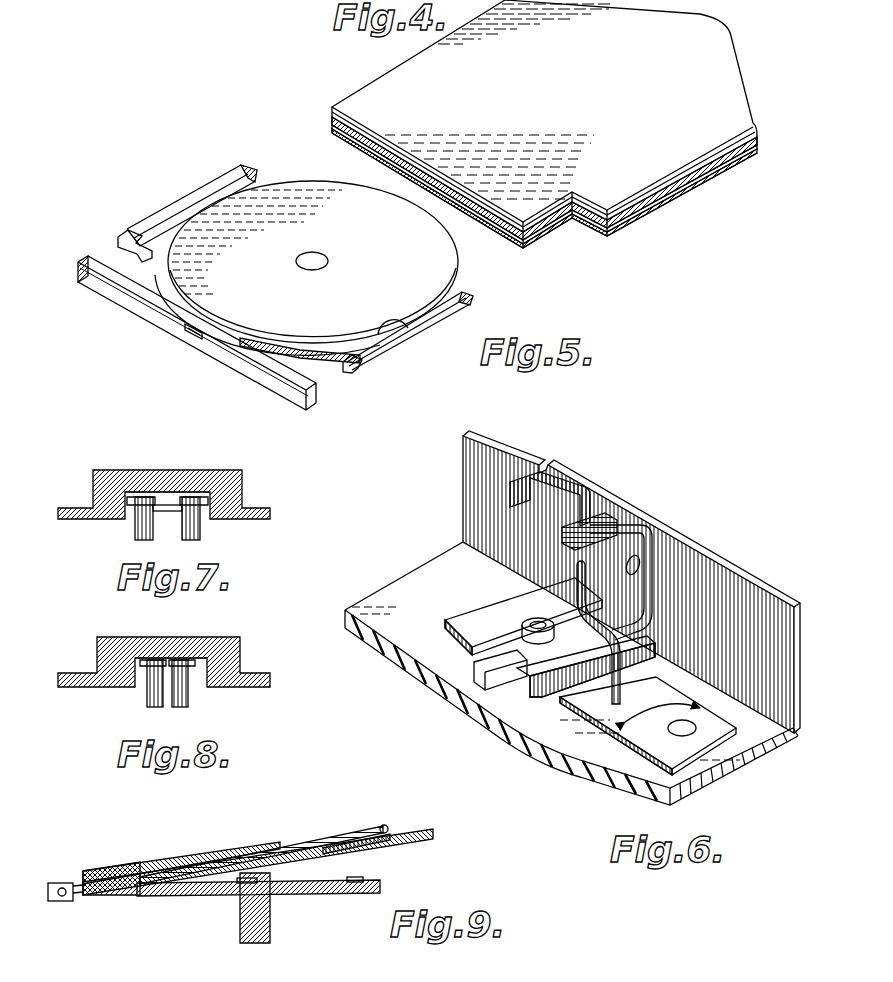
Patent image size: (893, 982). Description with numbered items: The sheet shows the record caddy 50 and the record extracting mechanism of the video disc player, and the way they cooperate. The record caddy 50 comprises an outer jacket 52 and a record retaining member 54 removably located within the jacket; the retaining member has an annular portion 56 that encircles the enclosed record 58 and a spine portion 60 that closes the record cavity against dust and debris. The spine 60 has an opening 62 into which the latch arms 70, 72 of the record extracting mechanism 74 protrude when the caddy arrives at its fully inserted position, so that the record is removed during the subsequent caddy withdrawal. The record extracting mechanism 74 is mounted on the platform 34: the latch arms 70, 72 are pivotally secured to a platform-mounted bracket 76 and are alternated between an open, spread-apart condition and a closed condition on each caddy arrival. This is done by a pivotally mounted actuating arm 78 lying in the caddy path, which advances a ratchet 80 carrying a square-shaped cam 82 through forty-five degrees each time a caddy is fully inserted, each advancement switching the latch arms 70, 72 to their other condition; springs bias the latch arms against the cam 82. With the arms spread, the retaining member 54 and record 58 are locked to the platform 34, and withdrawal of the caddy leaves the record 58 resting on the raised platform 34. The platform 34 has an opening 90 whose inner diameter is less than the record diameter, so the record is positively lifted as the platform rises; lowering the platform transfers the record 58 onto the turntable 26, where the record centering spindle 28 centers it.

In FIG. 9, the turntable 26 is at (307, 890).
In FIG. 9, the record centering spindle 28 is at (240, 903).
In FIG. 6, the platform 34 is at (416, 575).
In FIG. 9, the platform 34 is at (435, 832).
In FIG. 5, the record caddy 50 is at (190, 112).
In FIG. 4, the outer jacket 52 is at (743, 103).
In FIG. 5, the record retaining member 54 is at (160, 203).
In FIG. 5, the annular portion 56 is at (417, 327).
In FIG. 5, the record 58 is at (317, 188).
In FIG. 9, the record 58 is at (353, 828).
In FIG. 5, the spine portion 60 is at (124, 295).
In FIG. 7, the spine portion 60 is at (240, 480).
In FIG. 8, the spine portion 60 is at (240, 650).
In FIG. 9, the spine portion 60 is at (107, 875).
In FIG. 5, the opening 62 is at (188, 335).
In FIG. 7, the opening 62 is at (177, 493).
In FIG. 8, the opening 62 is at (137, 667).
In FIG. 6, the latch arm 70 is at (508, 500).
In FIG. 7, the latch arm 70 is at (135, 520).
In FIG. 8, the latch arm 70 is at (147, 690).
In FIG. 6, the latch arm 72 is at (553, 547).
In FIG. 7, the latch arm 72 is at (200, 527).
In FIG. 8, the latch arm 72 is at (188, 692).
In FIG. 6, the record extracting mechanism 74 is at (742, 517).
In FIG. 9, the record extracting mechanism 74 is at (68, 882).
In FIG. 6, the bracket 76 is at (754, 582).
In FIG. 6, the actuating arm 78 is at (647, 596).
In FIG. 6, the ratchet 80 is at (485, 668).
In FIG. 6, the square-shaped cam 82 is at (517, 610).
In FIG. 9, the opening 90 is at (373, 845).